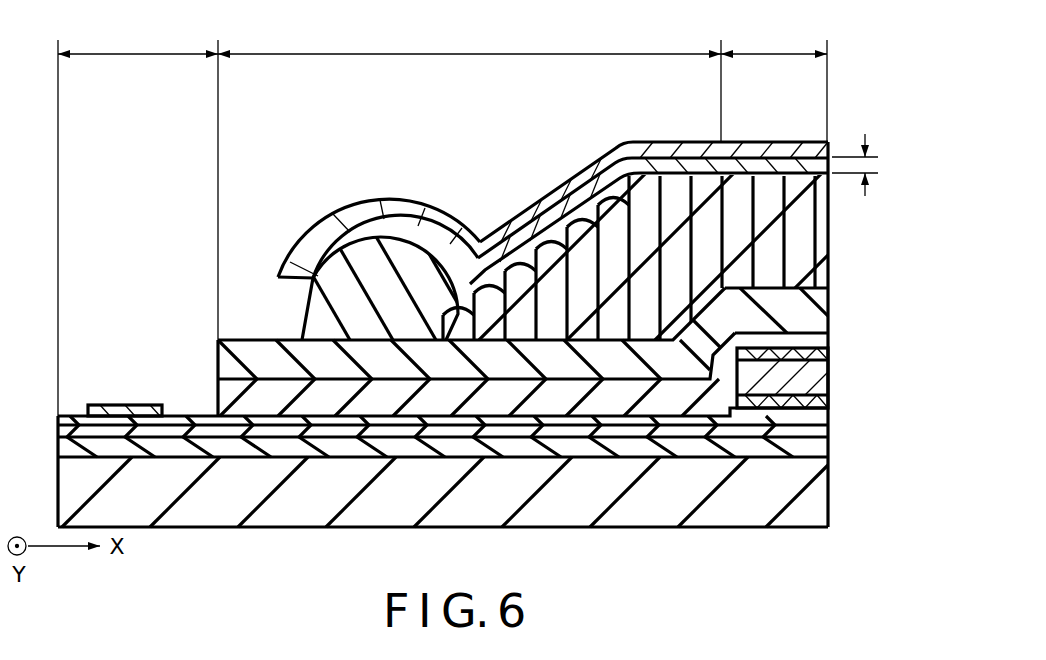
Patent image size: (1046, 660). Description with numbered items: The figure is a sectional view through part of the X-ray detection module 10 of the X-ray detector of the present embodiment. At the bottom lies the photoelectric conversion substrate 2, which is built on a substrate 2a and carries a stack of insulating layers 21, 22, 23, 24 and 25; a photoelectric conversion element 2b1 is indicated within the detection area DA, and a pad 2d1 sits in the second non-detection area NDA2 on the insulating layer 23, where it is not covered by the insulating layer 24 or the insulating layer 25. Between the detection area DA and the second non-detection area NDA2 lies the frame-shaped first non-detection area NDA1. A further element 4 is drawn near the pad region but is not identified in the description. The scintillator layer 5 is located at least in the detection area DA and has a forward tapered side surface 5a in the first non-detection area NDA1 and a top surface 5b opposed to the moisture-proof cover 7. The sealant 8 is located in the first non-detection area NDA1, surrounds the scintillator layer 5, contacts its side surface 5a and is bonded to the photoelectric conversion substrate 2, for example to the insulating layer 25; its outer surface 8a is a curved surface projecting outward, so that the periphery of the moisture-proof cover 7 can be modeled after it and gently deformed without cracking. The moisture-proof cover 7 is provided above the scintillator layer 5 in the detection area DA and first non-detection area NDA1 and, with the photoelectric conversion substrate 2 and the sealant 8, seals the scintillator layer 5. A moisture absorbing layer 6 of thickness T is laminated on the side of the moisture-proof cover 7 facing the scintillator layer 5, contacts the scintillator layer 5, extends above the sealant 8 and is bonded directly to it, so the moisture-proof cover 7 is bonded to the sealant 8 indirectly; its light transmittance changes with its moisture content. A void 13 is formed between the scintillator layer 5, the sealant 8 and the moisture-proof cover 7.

The photoelectric conversion substrate 2 is at (834, 521).
The substrate 2a is at (815, 483).
The photoelectric conversion element 2b1 is at (767, 382).
The pad 2d1 is at (125, 405).
The terminal 4 is at (782, 378).
The scintillator layer 5 is at (834, 236).
The side surface 5a is at (572, 198).
The top surface 5b is at (758, 158).
The moisture absorbing layer 6 is at (623, 150).
The moisture-proof cover 7 is at (676, 150).
The sealant 8 is at (345, 325).
The outer surface 8a is at (348, 230).
The X-ray detection module 10 is at (834, 128).
The void 13 is at (466, 286).
The insulating layer 21 is at (830, 449).
The insulating layer 22 is at (830, 430).
The insulating layer 23 is at (830, 413).
The insulating layer 24 is at (805, 343).
The insulating layer 25 is at (830, 310).
The thickness T is at (878, 165).
The first non-detection area NDA1 is at (469, 85).
The second non-detection area NDA2 is at (138, 222).
The detection area DA is at (774, 85).